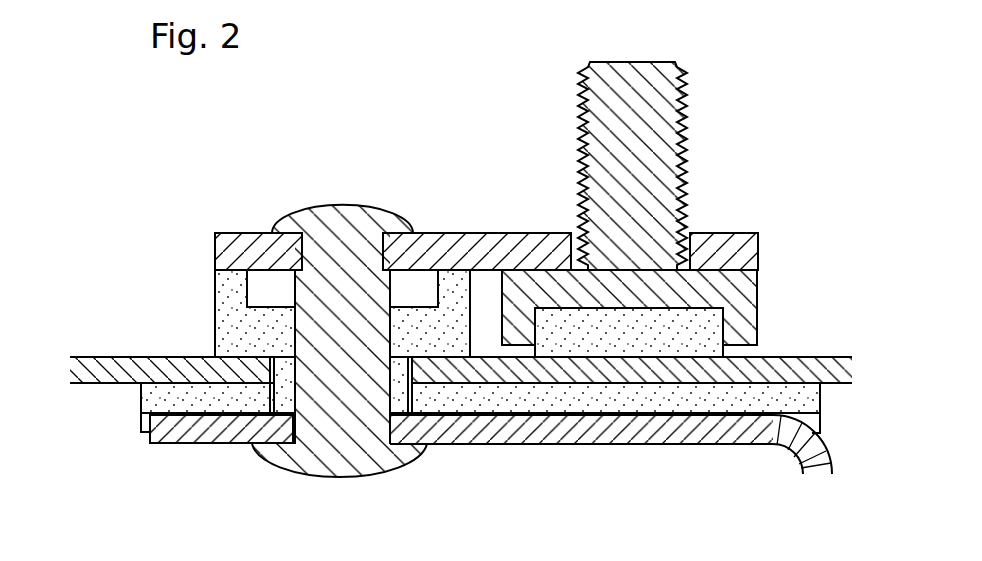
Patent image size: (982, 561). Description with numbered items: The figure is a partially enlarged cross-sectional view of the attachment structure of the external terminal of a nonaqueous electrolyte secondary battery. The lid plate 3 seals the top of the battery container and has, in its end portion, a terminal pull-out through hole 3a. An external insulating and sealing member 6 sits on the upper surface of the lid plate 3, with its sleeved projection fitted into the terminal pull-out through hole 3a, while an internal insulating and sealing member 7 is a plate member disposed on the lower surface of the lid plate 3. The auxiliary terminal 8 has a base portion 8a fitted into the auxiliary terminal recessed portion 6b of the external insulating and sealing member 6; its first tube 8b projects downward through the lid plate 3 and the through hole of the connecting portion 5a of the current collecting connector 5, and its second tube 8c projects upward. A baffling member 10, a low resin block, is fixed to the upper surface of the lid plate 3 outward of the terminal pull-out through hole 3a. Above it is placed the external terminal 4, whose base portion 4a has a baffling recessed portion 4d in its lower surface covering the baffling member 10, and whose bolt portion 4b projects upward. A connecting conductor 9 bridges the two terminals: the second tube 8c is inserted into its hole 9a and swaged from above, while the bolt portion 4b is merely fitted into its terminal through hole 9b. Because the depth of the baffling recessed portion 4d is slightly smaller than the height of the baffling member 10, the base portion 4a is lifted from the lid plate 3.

The lid plate 3 is at (453, 305).
The terminal pull-out through hole 3a is at (402, 362).
The external terminal 4 is at (669, 203).
The base portion 4a is at (742, 302).
The bolt portion 4b is at (600, 139).
The baffling recessed portion 4d is at (720, 345).
The current collecting connector 5 is at (476, 467).
The connecting portion 5a is at (214, 433).
The external insulating and sealing member 6 is at (299, 298).
The auxiliary terminal recessed portion 6b is at (265, 295).
The internal insulating and sealing member 7 is at (575, 405).
The auxiliary terminal 8 is at (299, 303).
The base portion 8a is at (268, 297).
The first tube 8b is at (365, 468).
The second tube 8c is at (372, 220).
The connecting conductor 9 is at (486, 215).
The hole 9a is at (310, 235).
The terminal through hole 9b is at (687, 245).
The baffling member 10 is at (640, 340).